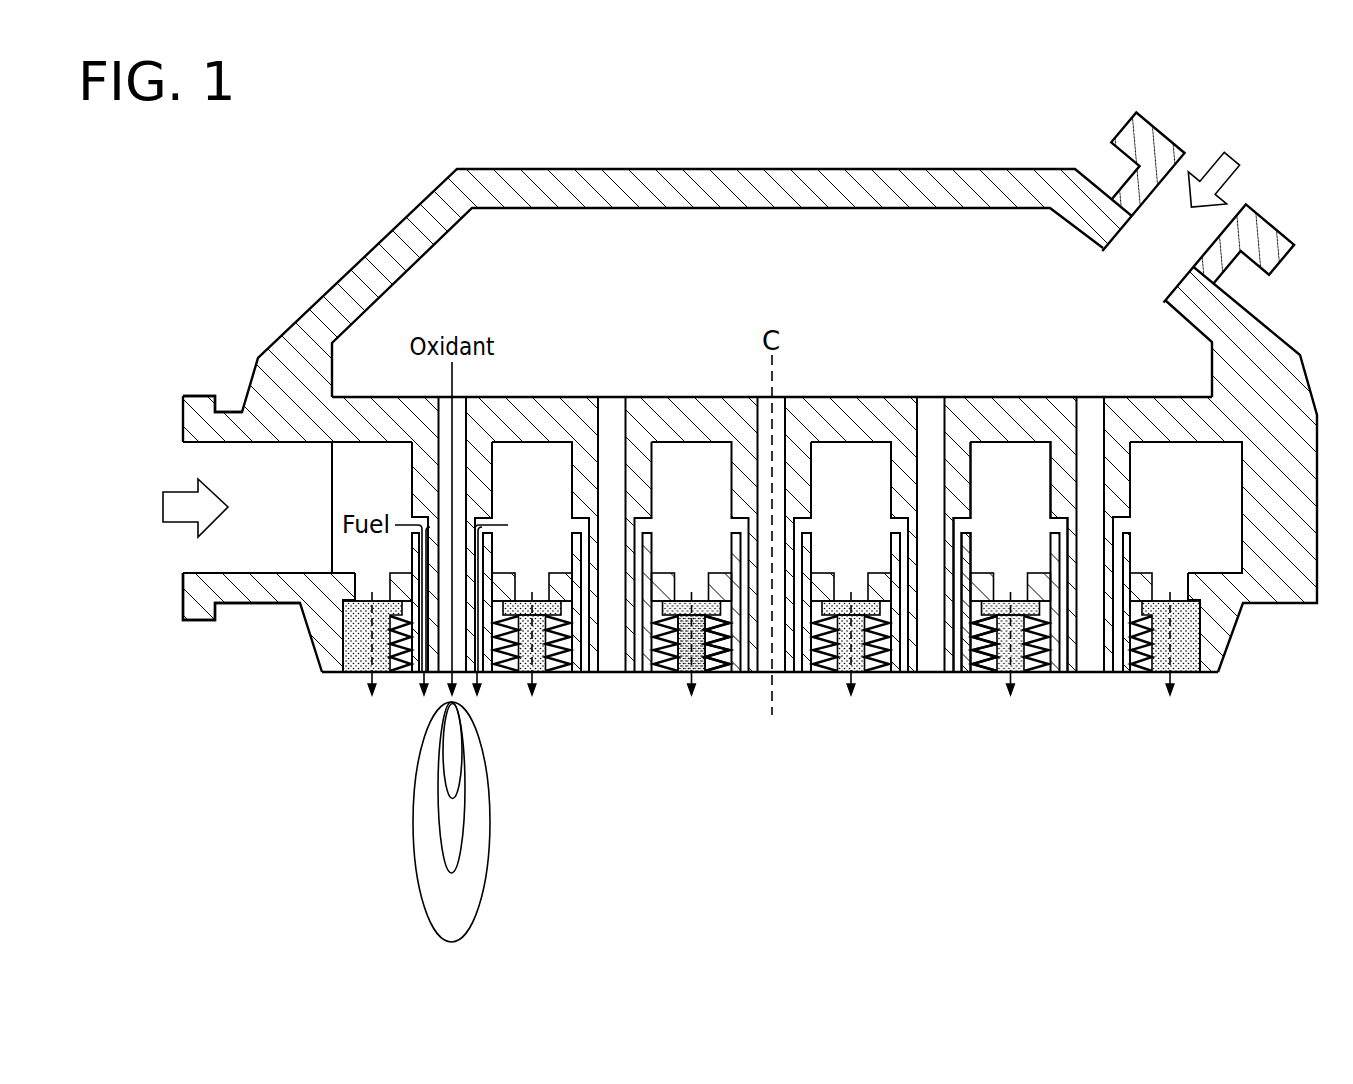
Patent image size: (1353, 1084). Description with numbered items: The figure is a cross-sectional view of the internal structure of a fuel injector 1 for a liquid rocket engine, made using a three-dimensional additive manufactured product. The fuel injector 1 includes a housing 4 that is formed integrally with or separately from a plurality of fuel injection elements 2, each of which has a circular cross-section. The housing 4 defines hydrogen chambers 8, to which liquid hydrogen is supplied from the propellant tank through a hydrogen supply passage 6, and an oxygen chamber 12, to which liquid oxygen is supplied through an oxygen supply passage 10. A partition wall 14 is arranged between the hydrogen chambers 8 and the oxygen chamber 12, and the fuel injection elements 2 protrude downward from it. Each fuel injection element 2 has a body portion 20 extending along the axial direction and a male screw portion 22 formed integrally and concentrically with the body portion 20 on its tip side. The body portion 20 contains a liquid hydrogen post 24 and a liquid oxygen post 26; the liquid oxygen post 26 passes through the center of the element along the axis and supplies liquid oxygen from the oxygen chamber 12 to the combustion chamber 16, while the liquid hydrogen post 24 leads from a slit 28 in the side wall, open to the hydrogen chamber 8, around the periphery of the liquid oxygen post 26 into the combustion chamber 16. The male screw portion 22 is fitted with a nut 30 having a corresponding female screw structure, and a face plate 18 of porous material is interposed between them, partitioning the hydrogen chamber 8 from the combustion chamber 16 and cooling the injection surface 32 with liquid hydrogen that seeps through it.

The fuel injector 1 is at (1281, 112).
The fuel injection element 2 is at (897, 673).
The housing 4 is at (803, 169).
The hydrogen supply passage 6 is at (186, 582).
The hydrogen chamber 8 is at (345, 503).
The oxygen supply passage 10 is at (1238, 217).
The oxygen chamber 12 is at (757, 297).
The partition wall 14 is at (884, 397).
The combustion chamber 16 is at (795, 819).
The face plate 18 is at (1193, 673).
The body portion 20 is at (974, 500).
The male screw portion 22 is at (971, 673).
The liquid hydrogen post 24 is at (412, 673).
The liquid oxygen post 26 is at (468, 673).
The slit 28 is at (415, 517).
The nut 30 is at (717, 673).
The injection surface 32 is at (611, 674).